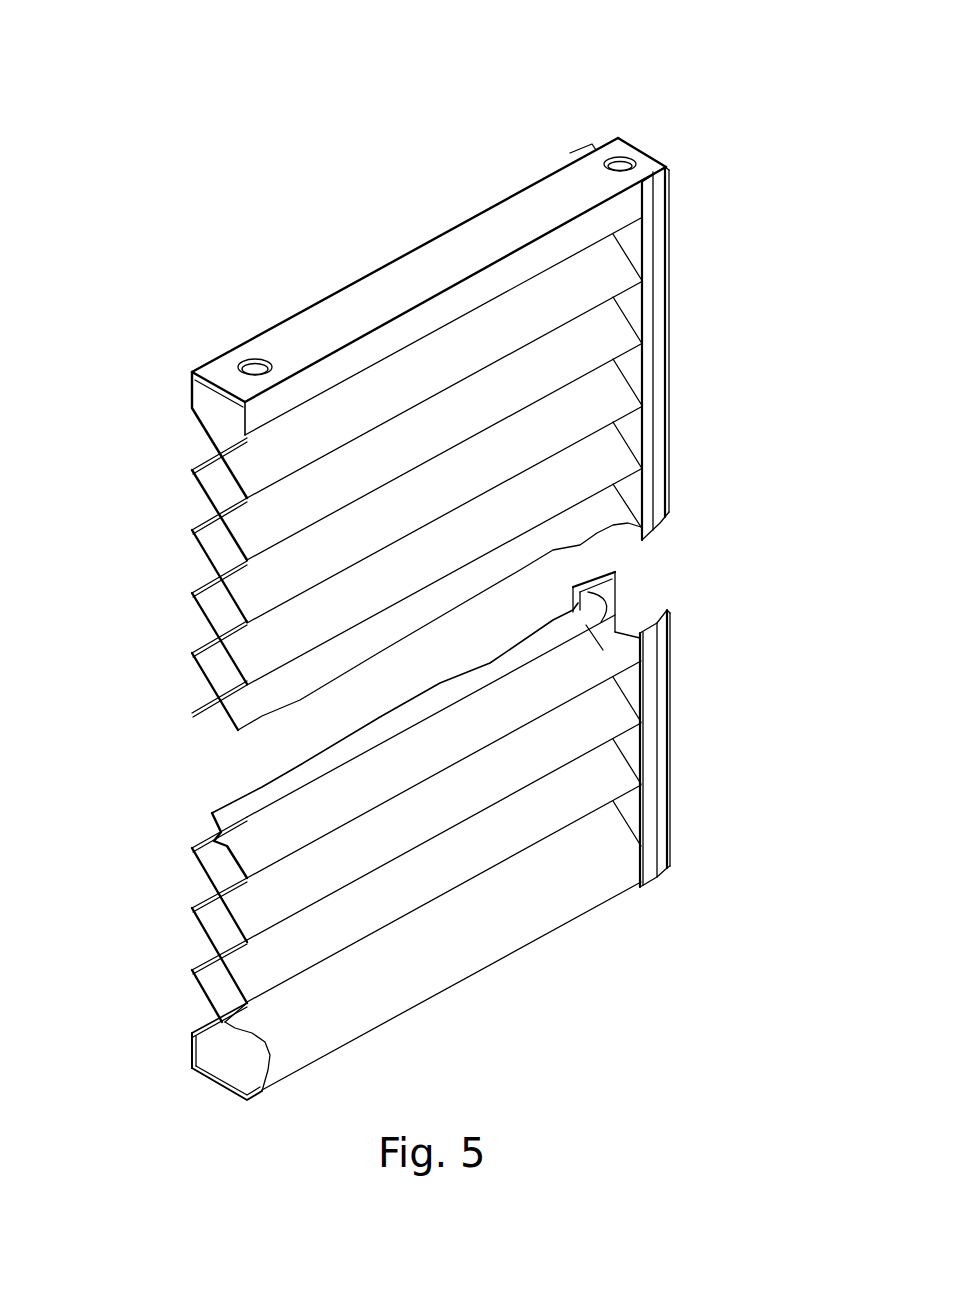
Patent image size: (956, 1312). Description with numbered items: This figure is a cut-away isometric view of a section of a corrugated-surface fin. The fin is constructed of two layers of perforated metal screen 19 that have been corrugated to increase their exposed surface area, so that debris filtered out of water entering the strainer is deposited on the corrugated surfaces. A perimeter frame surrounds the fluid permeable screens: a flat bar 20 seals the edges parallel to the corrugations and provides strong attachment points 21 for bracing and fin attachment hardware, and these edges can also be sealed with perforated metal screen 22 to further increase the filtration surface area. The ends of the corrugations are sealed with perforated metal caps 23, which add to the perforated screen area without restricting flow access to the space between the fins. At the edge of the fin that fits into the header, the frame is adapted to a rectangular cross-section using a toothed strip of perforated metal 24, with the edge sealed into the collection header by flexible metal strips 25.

The perforated metal screen 19 is at (262, 830).
The flat bar 20 is at (432, 258).
The attachment points 21 is at (258, 368).
The perforated metal screen 22 is at (223, 1065).
The perforated metal caps 23 is at (218, 603).
The toothed strip of perforated metal 24 is at (632, 745).
The flexible metal strips 25 is at (657, 283).